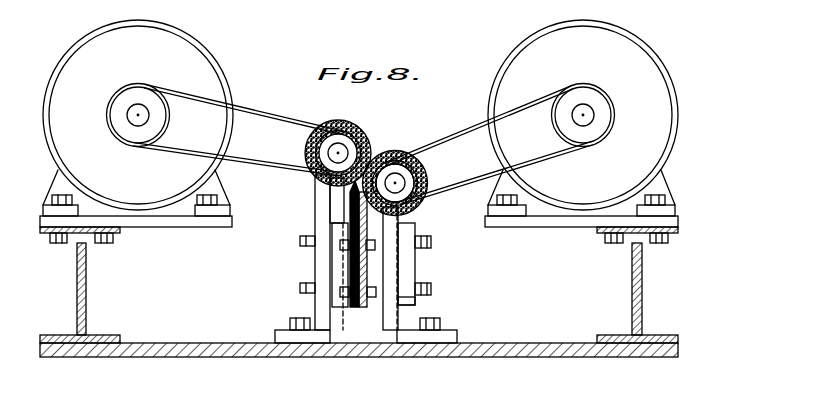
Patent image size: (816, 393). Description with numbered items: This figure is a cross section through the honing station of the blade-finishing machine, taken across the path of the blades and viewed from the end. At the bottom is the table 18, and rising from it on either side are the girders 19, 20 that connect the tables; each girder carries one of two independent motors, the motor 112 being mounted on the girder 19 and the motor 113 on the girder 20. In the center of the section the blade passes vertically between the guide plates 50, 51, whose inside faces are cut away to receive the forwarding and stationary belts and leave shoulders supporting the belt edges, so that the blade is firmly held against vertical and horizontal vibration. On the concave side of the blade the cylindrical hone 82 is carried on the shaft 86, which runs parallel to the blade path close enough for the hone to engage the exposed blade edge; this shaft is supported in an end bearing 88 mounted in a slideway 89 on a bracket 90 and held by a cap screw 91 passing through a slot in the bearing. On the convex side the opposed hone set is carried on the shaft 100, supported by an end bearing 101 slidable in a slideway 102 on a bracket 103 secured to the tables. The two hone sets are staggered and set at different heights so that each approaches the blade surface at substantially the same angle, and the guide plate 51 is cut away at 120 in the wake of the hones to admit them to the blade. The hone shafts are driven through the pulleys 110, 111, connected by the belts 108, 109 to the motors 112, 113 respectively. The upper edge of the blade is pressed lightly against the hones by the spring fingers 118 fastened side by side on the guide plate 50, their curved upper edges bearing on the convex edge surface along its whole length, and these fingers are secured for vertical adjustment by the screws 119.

The table 18 is at (160, 343).
The girder 19 is at (645, 279).
The girder 20 is at (84, 277).
The guide plate 50 is at (355, 310).
The guide plate 51 is at (363, 310).
The hone 82 is at (396, 151).
The shaft 86 is at (428, 163).
The end bearing 88 is at (415, 213).
The slideway 89 is at (420, 300).
The bracket 90 is at (456, 333).
The cap screw 91 is at (433, 285).
The shaft 100 is at (360, 134).
The end bearing 101 is at (313, 190).
The slideway 102 is at (333, 252).
The bracket 103 is at (278, 330).
The belt 108 is at (531, 100).
The belt 109 is at (240, 109).
The pulley 110 is at (428, 171).
The pulley 111 is at (303, 142).
The motor 112 is at (600, 23).
The motor 113 is at (195, 33).
The spring finger 118 is at (333, 212).
The screw 119 is at (345, 298).
The cut-away 120 is at (430, 226).